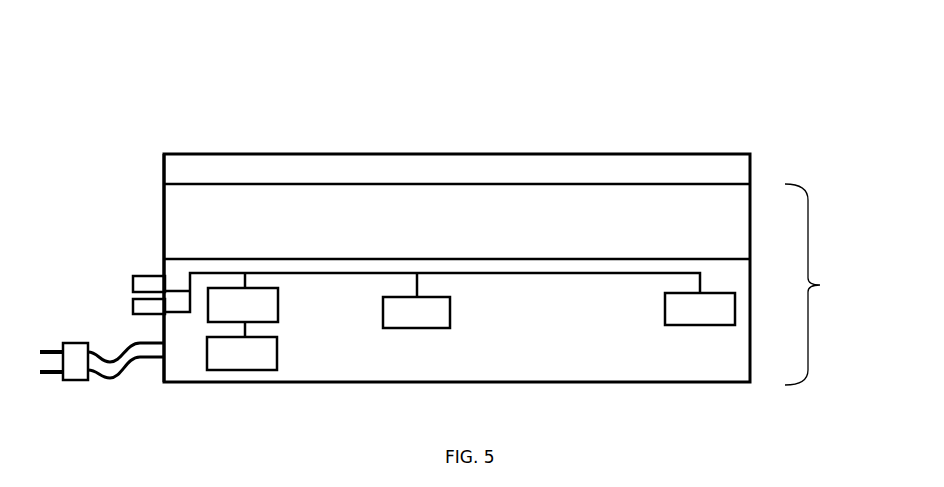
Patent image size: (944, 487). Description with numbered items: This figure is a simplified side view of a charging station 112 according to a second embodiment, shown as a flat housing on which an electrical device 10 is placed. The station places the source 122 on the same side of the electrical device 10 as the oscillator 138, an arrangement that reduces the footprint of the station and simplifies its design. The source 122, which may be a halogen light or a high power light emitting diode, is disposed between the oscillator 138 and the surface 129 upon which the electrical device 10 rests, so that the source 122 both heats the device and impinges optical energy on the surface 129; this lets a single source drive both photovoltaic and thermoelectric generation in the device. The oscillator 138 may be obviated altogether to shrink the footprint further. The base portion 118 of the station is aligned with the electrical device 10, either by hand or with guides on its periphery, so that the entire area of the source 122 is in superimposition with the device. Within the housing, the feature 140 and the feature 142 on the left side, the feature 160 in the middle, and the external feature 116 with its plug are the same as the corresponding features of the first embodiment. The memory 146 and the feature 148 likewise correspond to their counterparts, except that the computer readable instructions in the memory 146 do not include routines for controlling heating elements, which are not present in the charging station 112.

The electrical device 10 is at (744, 153).
The charging station 112 is at (449, 96).
The power cord and plug 116 is at (84, 410).
The base portion 118 is at (837, 284).
The source 122 is at (163, 204).
The surface 129 is at (273, 172).
The oscillator 138 is at (665, 297).
The connector 140 is at (134, 277).
The connector 142 is at (134, 301).
The memory 146 is at (243, 297).
The processor 148 is at (242, 346).
The sensor 160 is at (383, 300).